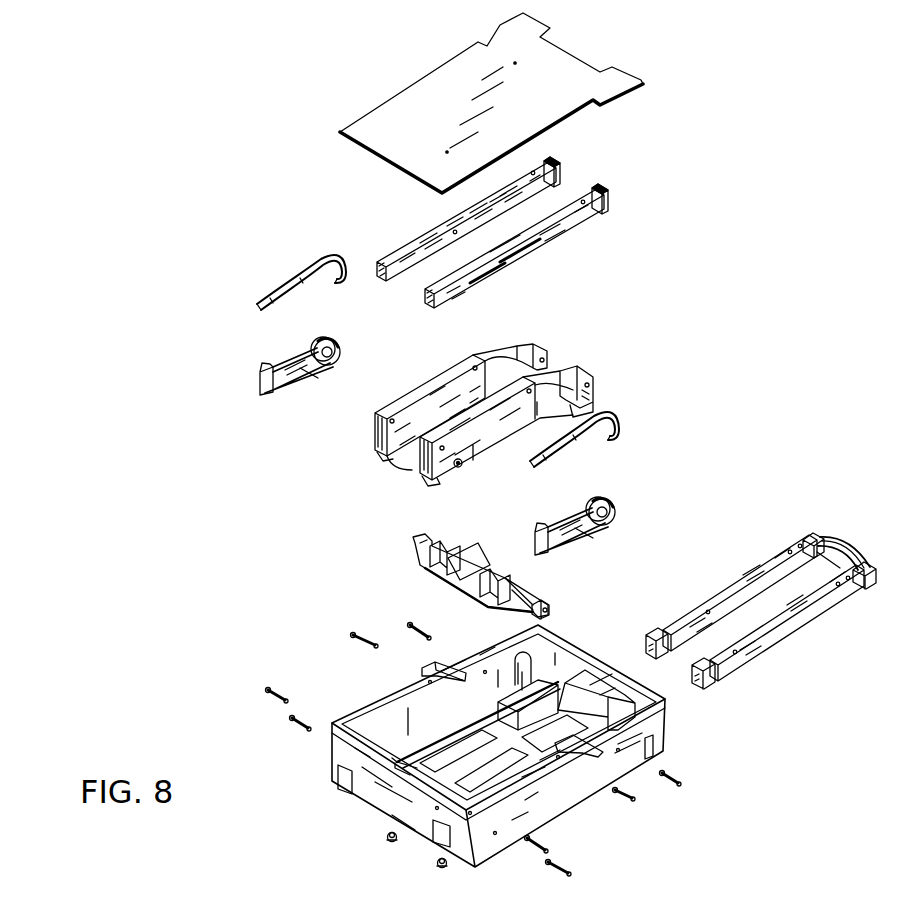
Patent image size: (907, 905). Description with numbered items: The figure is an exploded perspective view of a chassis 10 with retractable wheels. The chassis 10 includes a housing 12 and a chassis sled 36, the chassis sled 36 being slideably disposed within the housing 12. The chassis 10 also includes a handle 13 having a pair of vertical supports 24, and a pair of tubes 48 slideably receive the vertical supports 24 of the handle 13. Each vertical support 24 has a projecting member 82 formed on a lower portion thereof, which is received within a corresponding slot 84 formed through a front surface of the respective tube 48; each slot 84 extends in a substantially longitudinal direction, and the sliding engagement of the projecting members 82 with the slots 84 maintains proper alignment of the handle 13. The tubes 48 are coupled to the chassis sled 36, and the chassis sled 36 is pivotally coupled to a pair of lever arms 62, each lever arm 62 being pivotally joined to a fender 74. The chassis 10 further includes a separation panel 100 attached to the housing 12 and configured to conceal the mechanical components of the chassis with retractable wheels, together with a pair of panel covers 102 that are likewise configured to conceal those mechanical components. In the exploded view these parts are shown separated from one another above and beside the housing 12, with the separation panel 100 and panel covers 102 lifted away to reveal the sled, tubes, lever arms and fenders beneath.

The chassis 10 is at (778, 93).
The housing 12 is at (570, 798).
The handle 13 is at (761, 587).
The vertical supports 24 is at (723, 667).
The chassis sled 36 is at (423, 560).
The tubes 48 is at (603, 192).
The lever arms 62 is at (607, 413).
The fender 74 is at (608, 498).
The projecting member 82 is at (730, 647).
The slot 84 is at (583, 202).
The separation panel 100 is at (567, 53).
The panel covers 102 is at (586, 372).